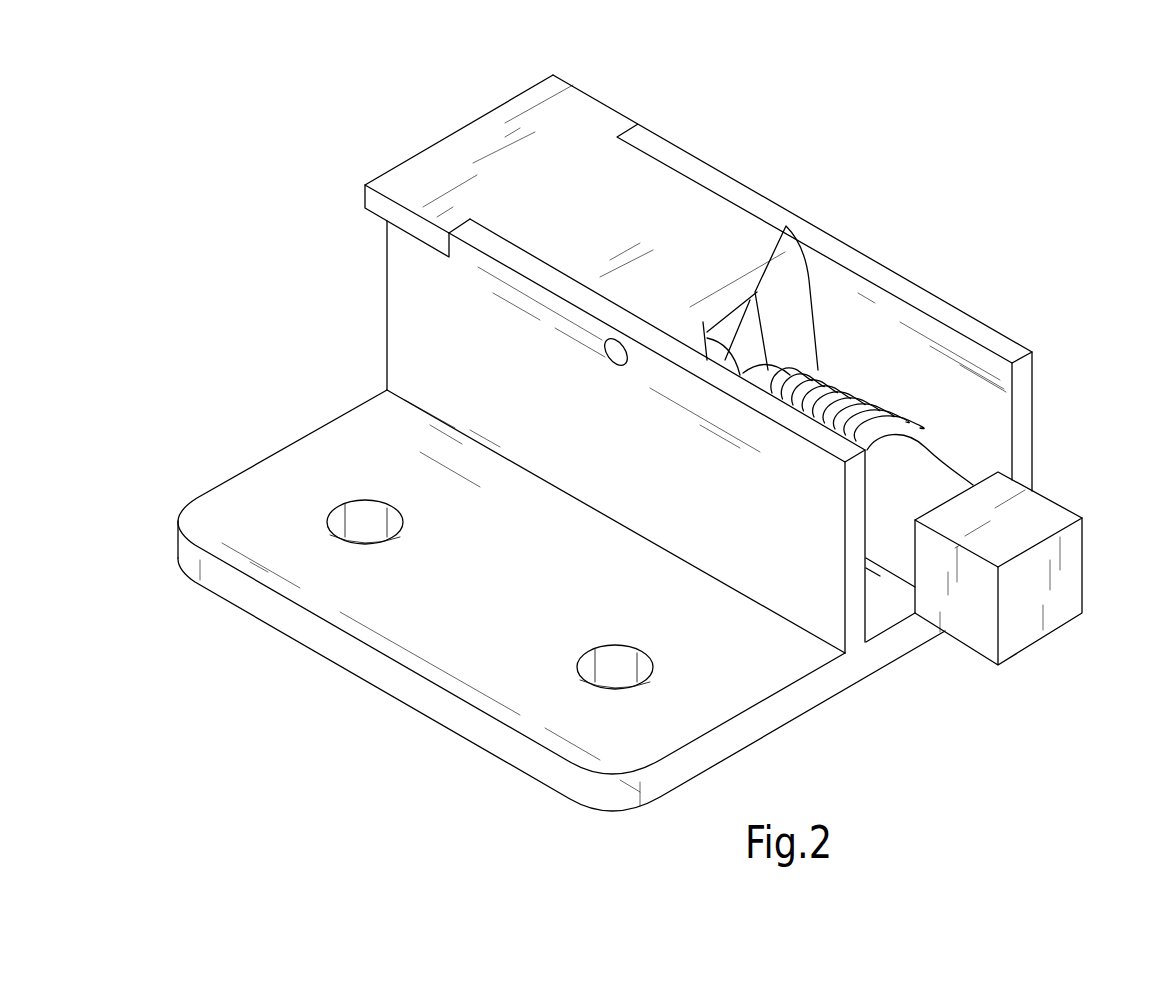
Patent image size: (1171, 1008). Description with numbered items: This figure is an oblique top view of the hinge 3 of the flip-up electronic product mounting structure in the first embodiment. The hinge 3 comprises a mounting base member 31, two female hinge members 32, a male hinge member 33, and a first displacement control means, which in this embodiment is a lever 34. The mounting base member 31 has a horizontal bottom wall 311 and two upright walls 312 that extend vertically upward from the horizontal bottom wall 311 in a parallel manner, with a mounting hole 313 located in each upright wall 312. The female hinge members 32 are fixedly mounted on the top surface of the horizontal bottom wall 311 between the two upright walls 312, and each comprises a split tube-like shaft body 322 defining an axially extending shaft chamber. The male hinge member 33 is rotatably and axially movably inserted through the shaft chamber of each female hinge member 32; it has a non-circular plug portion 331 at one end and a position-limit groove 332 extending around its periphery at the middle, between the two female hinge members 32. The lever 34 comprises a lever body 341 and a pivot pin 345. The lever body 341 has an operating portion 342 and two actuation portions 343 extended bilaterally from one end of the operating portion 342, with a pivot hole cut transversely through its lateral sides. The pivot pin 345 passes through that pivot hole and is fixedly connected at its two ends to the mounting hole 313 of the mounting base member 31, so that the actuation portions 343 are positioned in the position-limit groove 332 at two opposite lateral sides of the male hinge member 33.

The hinge 3 is at (765, 178).
The mounting base member 31 is at (228, 485).
The horizontal bottom wall 311 is at (805, 695).
The upright walls 312 is at (393, 272).
The mounting hole 313 is at (624, 366).
The female hinge members 32 is at (878, 380).
The split tube-like shaft body 322 is at (890, 405).
The male hinge member 33 is at (945, 470).
The non-circular plug portion 331 is at (1050, 498).
The position-limit groove 332 is at (783, 224).
The lever 34 is at (658, 150).
The lever body 341 is at (665, 187).
The operating portion 342 is at (473, 135).
The actuation portions 343 is at (793, 338).
The pivot pin 345 is at (610, 352).